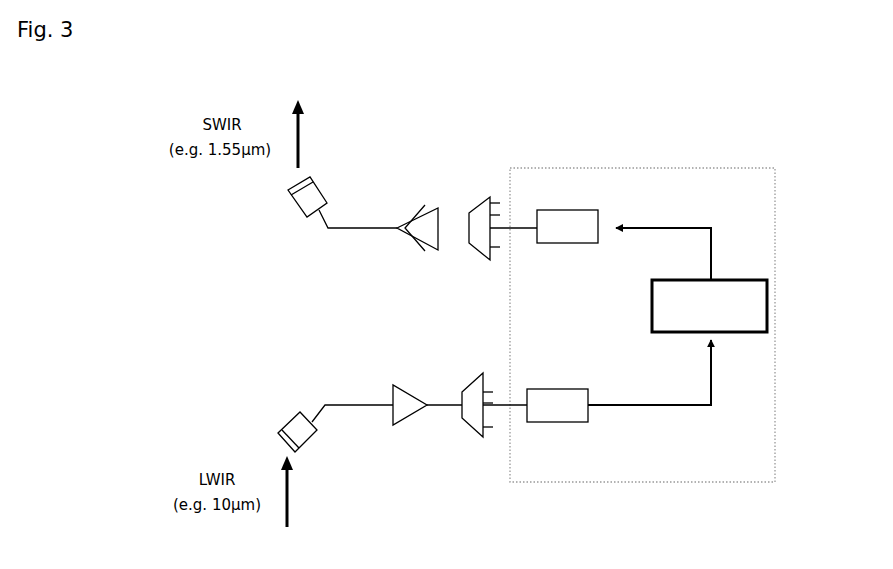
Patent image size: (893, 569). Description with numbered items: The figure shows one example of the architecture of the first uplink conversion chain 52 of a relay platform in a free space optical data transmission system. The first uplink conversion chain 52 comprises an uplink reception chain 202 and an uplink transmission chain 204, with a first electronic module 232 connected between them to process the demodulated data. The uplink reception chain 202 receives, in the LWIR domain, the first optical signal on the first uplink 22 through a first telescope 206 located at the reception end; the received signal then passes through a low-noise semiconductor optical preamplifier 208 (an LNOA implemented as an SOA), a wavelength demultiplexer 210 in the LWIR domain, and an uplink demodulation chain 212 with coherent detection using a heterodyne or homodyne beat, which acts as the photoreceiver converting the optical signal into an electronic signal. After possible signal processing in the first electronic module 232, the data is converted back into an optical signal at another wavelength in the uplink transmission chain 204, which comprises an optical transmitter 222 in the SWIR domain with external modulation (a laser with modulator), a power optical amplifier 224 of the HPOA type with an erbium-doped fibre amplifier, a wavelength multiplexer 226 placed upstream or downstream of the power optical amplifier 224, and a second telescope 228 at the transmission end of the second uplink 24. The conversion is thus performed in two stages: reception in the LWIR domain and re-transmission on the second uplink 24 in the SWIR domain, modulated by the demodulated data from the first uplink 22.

The first uplink conversion chain 52 is at (399, 90).
The second uplink 24 is at (300, 141).
The second telescope 228 is at (290, 198).
The uplink transmission chain 204 is at (449, 195).
The power optical amplifier 224 is at (397, 237).
The wavelength multiplexer 226 is at (487, 196).
The optical transmitter 222 is at (560, 210).
The first electronic module 232 is at (677, 316).
The first uplink 22 is at (289, 492).
The first telescope 206 is at (292, 422).
The uplink reception chain 202 is at (440, 484).
The low-noise semiconductor optical preamplifier 208 is at (397, 390).
The wavelength demultiplexer 210 is at (483, 437).
The uplink demodulation chain 212 is at (558, 422).